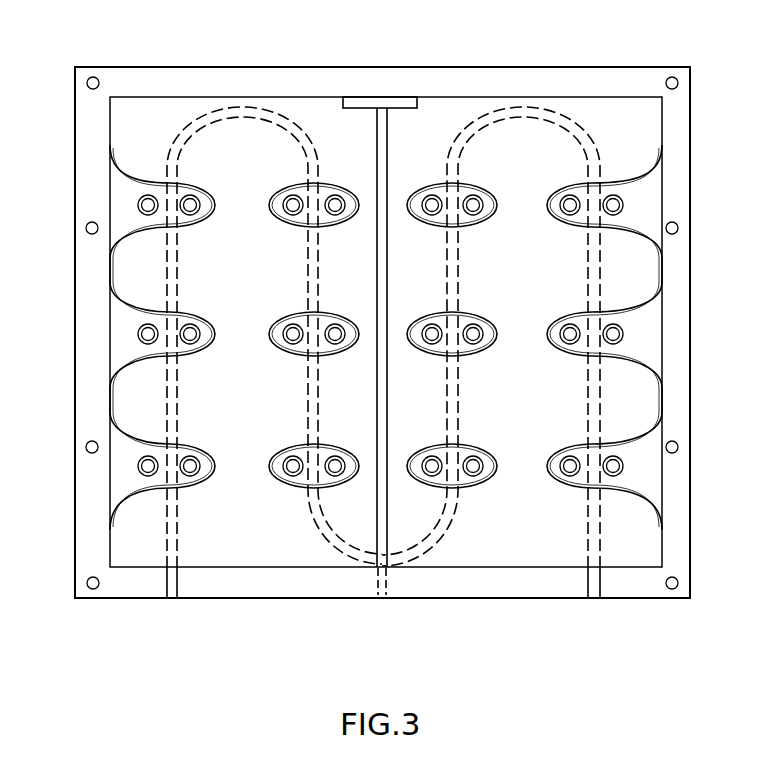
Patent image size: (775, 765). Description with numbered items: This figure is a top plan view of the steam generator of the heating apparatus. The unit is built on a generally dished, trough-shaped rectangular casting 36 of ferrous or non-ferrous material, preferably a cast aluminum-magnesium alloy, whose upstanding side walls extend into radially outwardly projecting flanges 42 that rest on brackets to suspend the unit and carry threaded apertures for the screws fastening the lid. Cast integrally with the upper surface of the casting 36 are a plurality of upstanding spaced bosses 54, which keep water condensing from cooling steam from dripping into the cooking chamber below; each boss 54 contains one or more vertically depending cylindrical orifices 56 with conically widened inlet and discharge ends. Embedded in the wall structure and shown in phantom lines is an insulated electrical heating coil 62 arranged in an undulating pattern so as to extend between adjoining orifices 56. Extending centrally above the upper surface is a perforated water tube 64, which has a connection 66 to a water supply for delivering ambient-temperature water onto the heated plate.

The casting 36 is at (514, 64).
The flanges 42 is at (678, 318).
The bosses 54 is at (283, 355).
The orifices 56 is at (289, 473).
The electrical heating coil 62 is at (165, 405).
The water tube 64 is at (388, 513).
The connection 66 is at (378, 596).